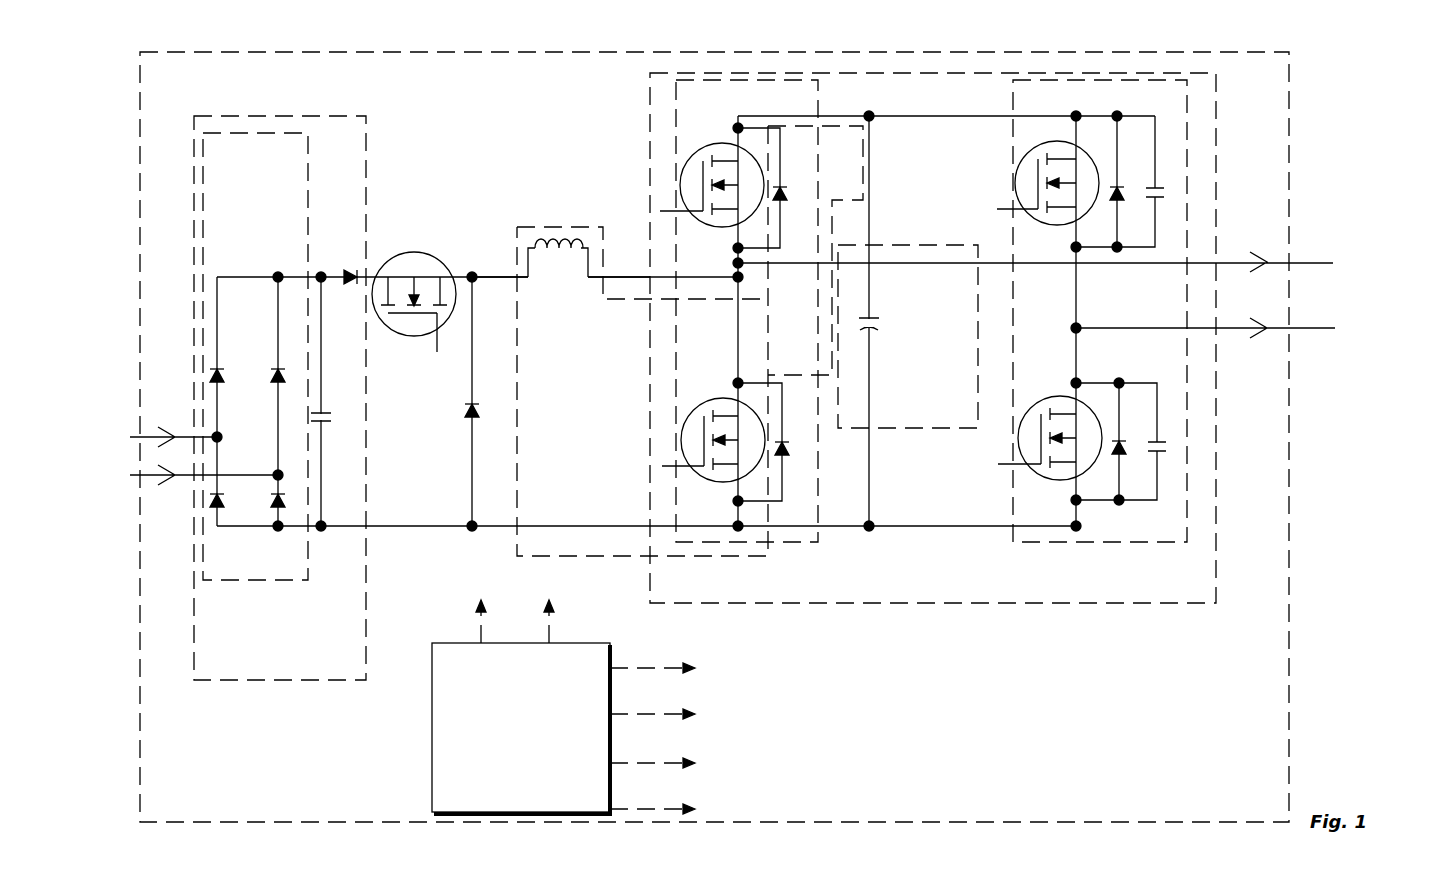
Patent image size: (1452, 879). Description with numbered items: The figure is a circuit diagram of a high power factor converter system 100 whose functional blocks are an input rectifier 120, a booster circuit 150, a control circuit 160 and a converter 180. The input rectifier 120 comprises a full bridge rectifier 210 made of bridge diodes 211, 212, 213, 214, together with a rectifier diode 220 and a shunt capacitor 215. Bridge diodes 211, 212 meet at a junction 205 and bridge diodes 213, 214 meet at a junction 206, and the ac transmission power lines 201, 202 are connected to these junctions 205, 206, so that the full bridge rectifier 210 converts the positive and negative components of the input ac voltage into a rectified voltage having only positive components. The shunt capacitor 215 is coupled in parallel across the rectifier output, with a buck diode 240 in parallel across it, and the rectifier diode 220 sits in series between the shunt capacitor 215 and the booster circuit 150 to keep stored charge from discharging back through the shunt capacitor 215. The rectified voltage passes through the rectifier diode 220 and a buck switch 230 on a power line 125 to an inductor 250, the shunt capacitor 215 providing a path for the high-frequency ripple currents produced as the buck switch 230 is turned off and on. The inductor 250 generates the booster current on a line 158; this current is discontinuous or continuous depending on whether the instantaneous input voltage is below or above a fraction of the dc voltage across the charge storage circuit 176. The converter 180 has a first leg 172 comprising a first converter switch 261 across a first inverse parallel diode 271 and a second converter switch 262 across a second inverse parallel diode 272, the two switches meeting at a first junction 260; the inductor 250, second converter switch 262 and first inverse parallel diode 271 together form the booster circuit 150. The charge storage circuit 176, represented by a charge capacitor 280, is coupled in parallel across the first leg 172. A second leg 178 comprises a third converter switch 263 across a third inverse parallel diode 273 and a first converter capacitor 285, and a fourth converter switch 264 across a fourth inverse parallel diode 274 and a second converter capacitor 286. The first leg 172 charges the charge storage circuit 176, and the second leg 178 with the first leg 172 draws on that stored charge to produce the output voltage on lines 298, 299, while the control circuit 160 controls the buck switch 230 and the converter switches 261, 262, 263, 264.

The high power factor converter system 100 is at (524, 89).
The input rectifier 120 is at (306, 672).
The full bridge rectifier 210 is at (274, 238).
The bridge diode 211 is at (216, 368).
The bridge diode 212 is at (217, 512).
The bridge diode 213 is at (276, 377).
The bridge diode 214 is at (283, 509).
The AC input line 201 is at (184, 437).
The AC input line 202 is at (184, 476).
The junction 205 is at (219, 433).
The junction 206 is at (278, 470).
The shunt capacitor 215 is at (328, 421).
The rectifier diode 220 is at (350, 275).
The buck switch 230 is at (398, 255).
The power line 125 is at (498, 275).
The buck diode 240 is at (467, 418).
The booster circuit 150 is at (606, 345).
The inductor 250 is at (545, 250).
The line 158 is at (624, 277).
The converter 180 is at (983, 595).
The first leg 172 is at (771, 105).
The second leg 178 is at (1100, 105).
The charge storage circuit 176 is at (942, 419).
The first converter switch 261 is at (700, 217).
The second converter switch 262 is at (695, 405).
The third converter switch 263 is at (1017, 168).
The fourth converter switch 264 is at (1030, 402).
The first inverse parallel diode 271 is at (787, 198).
The second inverse parallel diode 272 is at (790, 450).
The third inverse parallel diode 273 is at (1118, 193).
The fourth inverse parallel diode 274 is at (1128, 448).
The first junction 260 is at (746, 282).
The charge capacitor 280 is at (877, 318).
The first converter capacitor 285 is at (1156, 196).
The second converter capacitor 286 is at (1160, 452).
The output line 298 is at (1228, 263).
The output line 299 is at (1228, 329).
The control circuit 160 is at (538, 723).